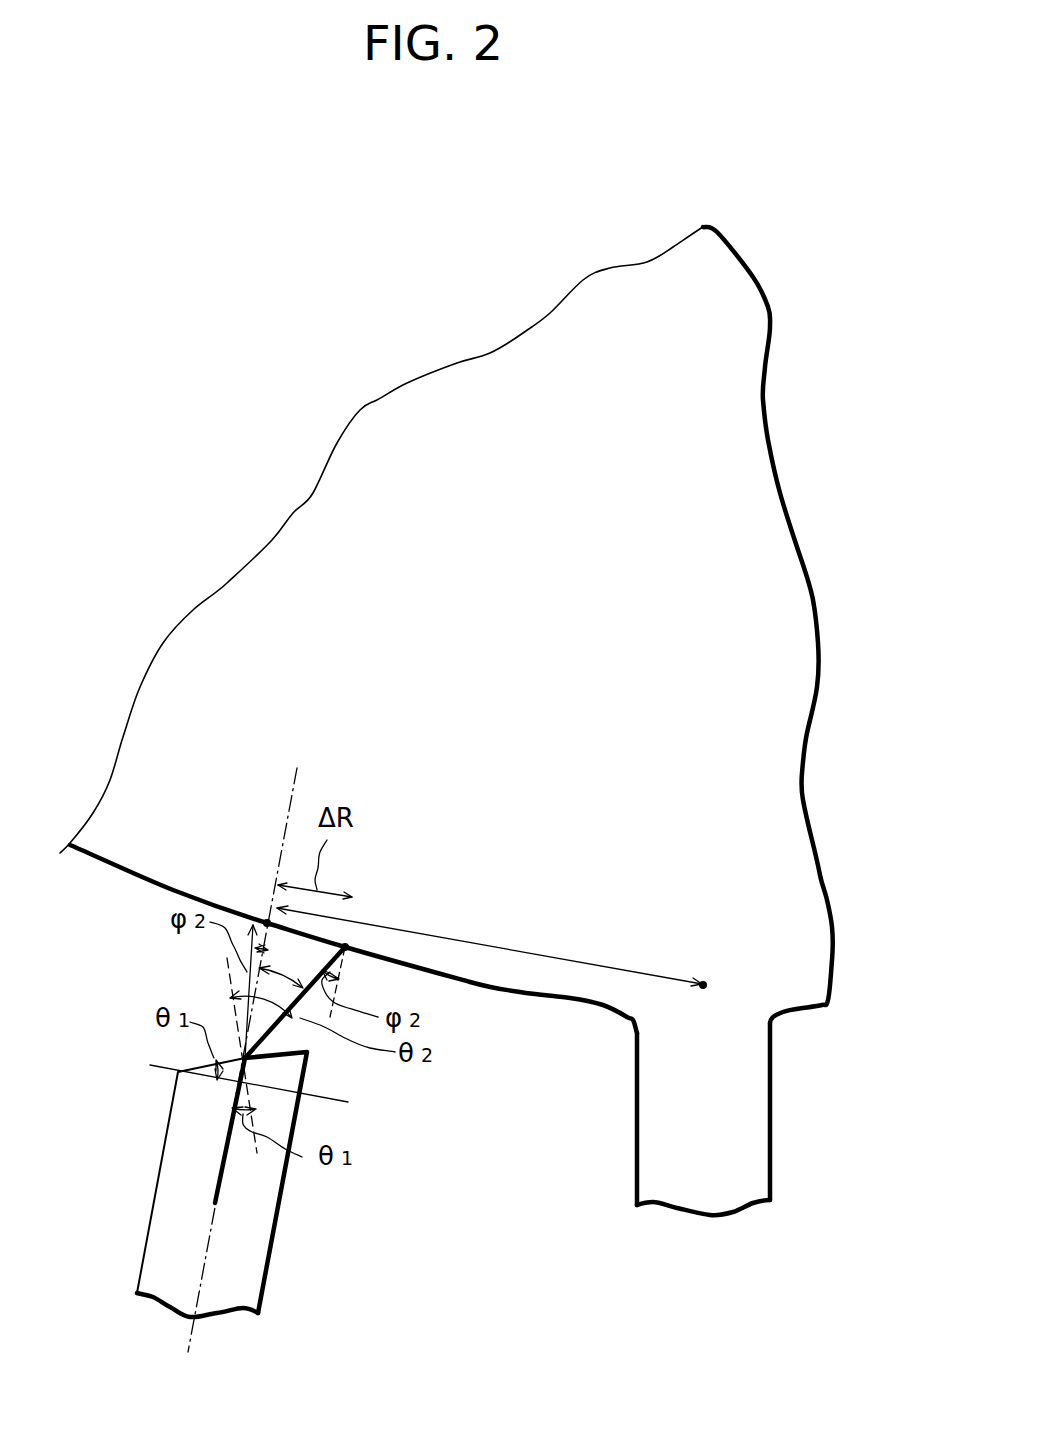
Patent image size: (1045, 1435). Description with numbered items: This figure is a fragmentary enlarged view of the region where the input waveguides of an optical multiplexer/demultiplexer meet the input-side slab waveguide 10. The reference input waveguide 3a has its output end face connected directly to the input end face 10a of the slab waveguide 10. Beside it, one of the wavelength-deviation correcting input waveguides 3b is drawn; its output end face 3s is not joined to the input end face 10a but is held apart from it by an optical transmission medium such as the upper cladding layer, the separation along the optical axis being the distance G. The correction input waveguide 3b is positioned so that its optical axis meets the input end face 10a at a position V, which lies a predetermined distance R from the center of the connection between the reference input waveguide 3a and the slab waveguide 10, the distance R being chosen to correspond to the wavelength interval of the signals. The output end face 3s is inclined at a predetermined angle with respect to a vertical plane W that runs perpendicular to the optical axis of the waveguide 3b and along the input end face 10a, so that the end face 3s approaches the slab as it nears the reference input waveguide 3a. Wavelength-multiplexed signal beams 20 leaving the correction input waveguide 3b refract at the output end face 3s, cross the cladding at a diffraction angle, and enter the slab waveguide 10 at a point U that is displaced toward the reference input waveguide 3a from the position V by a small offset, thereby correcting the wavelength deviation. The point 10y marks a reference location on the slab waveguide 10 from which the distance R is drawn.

The input-side slab waveguide 10 is at (288, 485).
The input end face of the input-side slab waveguide 10a is at (103, 862).
The reference point on wheel 10y is at (701, 982).
The reference input waveguide 3a is at (637, 1132).
The wavelength-deviation correcting input waveguide 3b is at (150, 1215).
The output end face of the correction input waveguide 3s is at (280, 1046).
The wavelength-multiplexed signal beams 20 is at (223, 1165).
The position V is at (259, 905).
The point U is at (355, 980).
The distance R is at (489, 935).
The distance of separation G is at (258, 964).
The vertical plane W is at (323, 1098).